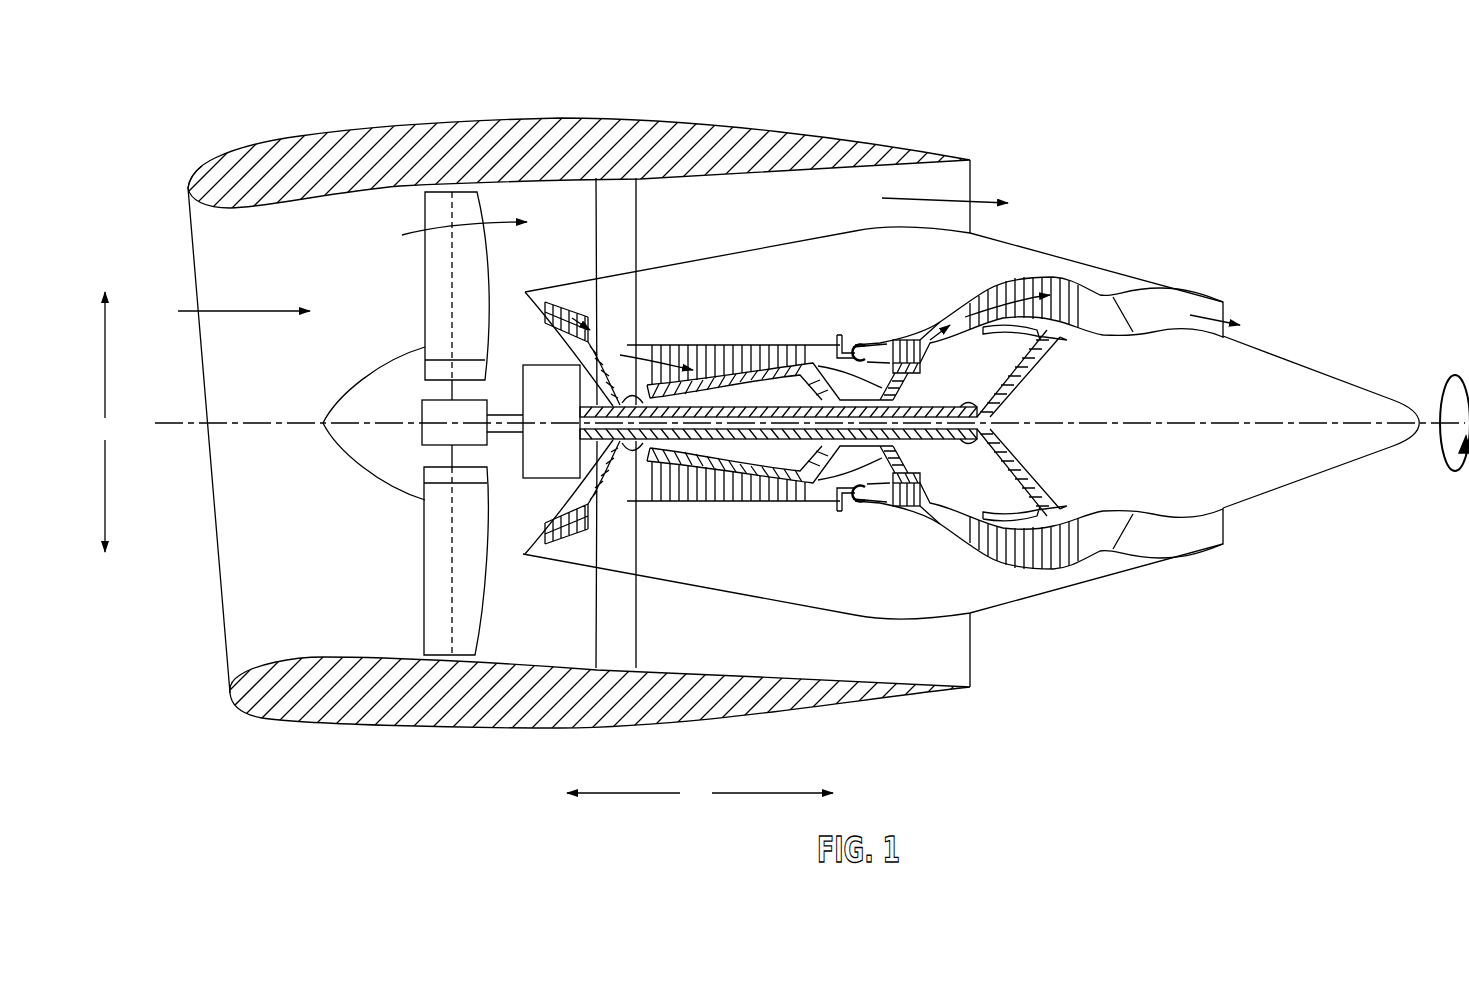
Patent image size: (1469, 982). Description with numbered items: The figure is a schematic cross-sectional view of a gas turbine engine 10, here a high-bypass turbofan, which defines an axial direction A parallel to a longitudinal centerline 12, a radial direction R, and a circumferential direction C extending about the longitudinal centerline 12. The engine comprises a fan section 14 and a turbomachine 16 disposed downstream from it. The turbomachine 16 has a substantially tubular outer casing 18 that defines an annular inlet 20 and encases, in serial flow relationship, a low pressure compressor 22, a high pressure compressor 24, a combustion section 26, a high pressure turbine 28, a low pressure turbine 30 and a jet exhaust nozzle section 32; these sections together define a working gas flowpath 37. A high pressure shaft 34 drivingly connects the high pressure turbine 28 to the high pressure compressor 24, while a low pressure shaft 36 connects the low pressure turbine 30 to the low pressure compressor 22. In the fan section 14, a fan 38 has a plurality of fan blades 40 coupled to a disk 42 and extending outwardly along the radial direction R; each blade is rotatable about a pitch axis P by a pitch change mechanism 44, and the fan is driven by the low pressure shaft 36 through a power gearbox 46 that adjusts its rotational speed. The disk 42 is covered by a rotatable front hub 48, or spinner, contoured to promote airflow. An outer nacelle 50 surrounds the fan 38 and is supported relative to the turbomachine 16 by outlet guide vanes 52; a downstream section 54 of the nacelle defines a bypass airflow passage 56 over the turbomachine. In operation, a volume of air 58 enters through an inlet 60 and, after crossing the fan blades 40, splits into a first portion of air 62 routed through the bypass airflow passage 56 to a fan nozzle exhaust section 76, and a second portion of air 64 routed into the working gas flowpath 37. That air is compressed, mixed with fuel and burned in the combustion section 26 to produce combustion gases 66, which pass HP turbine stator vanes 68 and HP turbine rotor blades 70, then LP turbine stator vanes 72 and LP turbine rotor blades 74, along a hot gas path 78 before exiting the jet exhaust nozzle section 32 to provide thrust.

The gas turbine engine 10 is at (1135, 132).
The longitudinal centerline 12 is at (1170, 422).
The fan section 14 is at (388, 215).
The turbomachine 16 is at (772, 278).
The outer casing 18 is at (795, 607).
The annular inlet 20 is at (518, 552).
The low pressure compressor 22 is at (592, 515).
The high pressure compressor 24 is at (673, 492).
The combustion section 26 is at (858, 500).
The high pressure turbine 28 is at (925, 498).
The low pressure turbine 30 is at (1055, 578).
The jet exhaust nozzle section 32 is at (1127, 553).
The high pressure shaft 34 is at (900, 388).
The low pressure shaft 36 is at (983, 398).
The working gas flowpath 37 is at (622, 488).
The fan 38 is at (383, 480).
The fan blades 40 is at (423, 572).
The disk 42 is at (437, 373).
The pitch change mechanism 44 is at (427, 402).
The power gearbox 46 is at (565, 385).
The front hub 48 is at (323, 425).
The outer nacelle 50 is at (480, 724).
The outlet guide vanes 52 is at (637, 233).
The downstream section of the nacelle 54 is at (898, 150).
The bypass airflow passage 56 is at (848, 209).
The volume of air 58 is at (245, 311).
The inlet 60 is at (222, 662).
The first portion of air 62 is at (438, 233).
The second portion of air 64 is at (502, 303).
The combustion gases 66 is at (1016, 300).
The HP turbine stator vanes 68 is at (875, 503).
The HP turbine rotor blades 70 is at (897, 493).
The LP turbine stator vanes 72 is at (980, 547).
The LP turbine rotor blades 74 is at (993, 555).
The fan nozzle exhaust section 76 is at (962, 183).
The hot gas path 78 is at (958, 320).
The pitch axis P is at (452, 210).
The radial direction R is at (105, 422).
The axial direction A is at (700, 794).
The circumferential direction C is at (1454, 439).